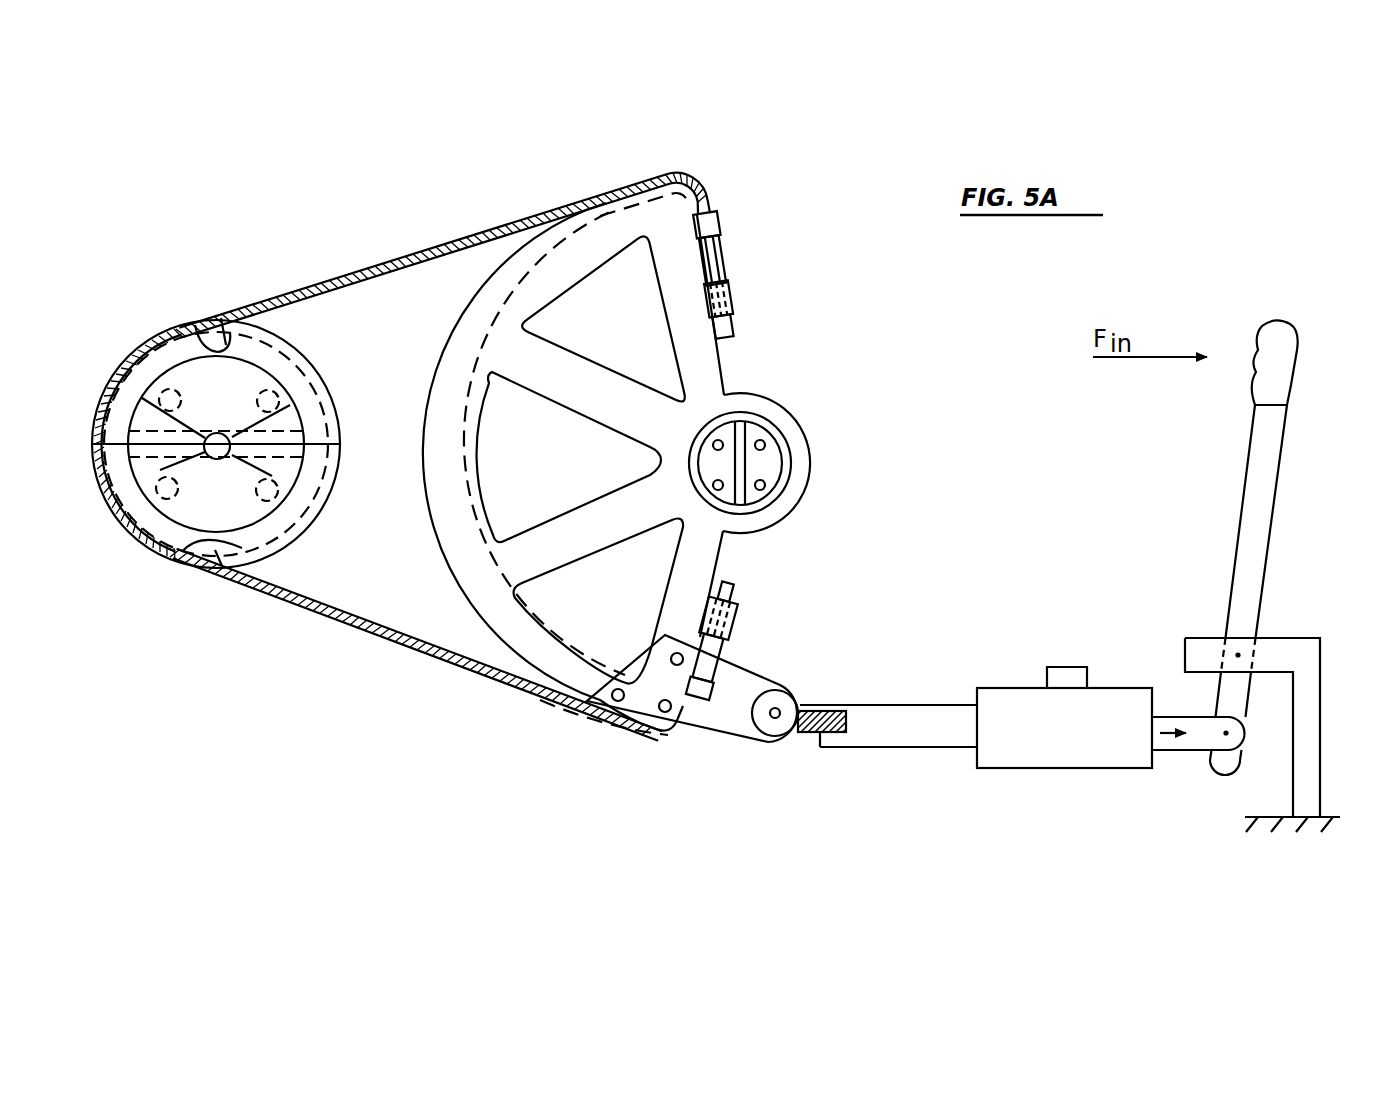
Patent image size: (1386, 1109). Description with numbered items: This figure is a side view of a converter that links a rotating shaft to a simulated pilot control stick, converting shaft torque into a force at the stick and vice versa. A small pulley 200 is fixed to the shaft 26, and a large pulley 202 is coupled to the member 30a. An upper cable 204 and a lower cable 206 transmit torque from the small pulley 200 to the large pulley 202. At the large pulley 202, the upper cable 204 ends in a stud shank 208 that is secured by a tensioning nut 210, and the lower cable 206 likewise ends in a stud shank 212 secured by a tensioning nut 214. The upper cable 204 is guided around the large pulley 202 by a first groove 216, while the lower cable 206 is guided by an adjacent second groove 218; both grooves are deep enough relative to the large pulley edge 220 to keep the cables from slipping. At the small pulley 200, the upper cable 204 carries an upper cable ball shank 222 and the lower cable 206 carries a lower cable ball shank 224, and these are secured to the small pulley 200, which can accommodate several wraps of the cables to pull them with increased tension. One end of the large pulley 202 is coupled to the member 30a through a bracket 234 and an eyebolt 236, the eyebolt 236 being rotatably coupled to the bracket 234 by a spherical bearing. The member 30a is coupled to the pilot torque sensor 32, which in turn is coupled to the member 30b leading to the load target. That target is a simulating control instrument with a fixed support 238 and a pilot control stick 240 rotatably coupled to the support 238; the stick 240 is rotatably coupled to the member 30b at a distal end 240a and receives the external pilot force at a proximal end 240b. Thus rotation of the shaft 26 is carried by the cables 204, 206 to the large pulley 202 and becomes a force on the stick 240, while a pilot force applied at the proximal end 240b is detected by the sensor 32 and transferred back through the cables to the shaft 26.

The small pulley 200 is at (82, 360).
The large pulley 202 is at (818, 408).
The upper cable 204 is at (437, 246).
The lower cable 206 is at (420, 662).
The stud shank 208 is at (722, 262).
The tensioning nut 210 is at (745, 318).
The stud shank 212 is at (712, 652).
The tensioning nut 214 is at (738, 603).
The first groove 216 is at (434, 378).
The second groove 218 is at (512, 638).
The large pulley edge 220 is at (482, 300).
The upper cable ball shank 222 is at (213, 566).
The lower cable ball shank 224 is at (221, 338).
The shaft 26 is at (242, 454).
The bracket 234 is at (734, 748).
The eyebolt 236 is at (822, 735).
The member 30a is at (890, 712).
The member 30b is at (1168, 745).
The pilot torque sensor 32 is at (995, 755).
The fixed support 238 is at (1282, 648).
The pilot control stick 240 is at (1262, 526).
The distal end 240a is at (1223, 787).
The proximal end 240b is at (1222, 410).